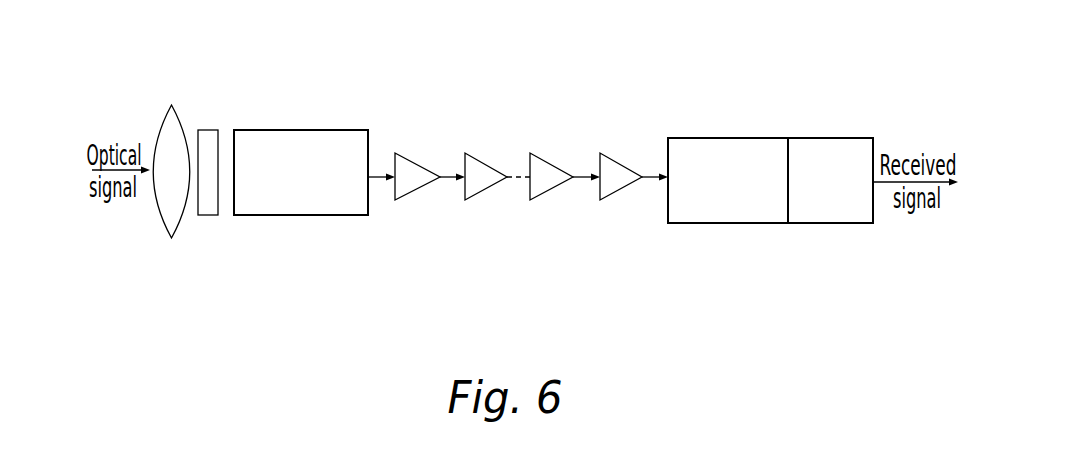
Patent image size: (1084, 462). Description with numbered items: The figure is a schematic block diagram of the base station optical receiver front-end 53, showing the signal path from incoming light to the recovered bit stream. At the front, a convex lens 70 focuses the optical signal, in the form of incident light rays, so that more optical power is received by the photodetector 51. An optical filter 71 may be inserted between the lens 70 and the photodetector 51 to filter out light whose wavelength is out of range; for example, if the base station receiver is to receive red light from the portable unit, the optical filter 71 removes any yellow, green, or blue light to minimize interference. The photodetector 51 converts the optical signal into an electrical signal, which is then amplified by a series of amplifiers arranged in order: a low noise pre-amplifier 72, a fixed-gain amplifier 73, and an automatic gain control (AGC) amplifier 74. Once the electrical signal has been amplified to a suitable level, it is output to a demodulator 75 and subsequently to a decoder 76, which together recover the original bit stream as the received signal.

The convex lens 70 is at (173, 108).
The optical filter 71 is at (208, 215).
The photodetector 51 is at (300, 130).
The base station optical receiver front-end 53 is at (523, 146).
The low noise pre-amplifier 72 is at (402, 155).
The fixed-gain amplifier 73 is at (522, 177).
The automatic gain control (AGC) amplifier 74 is at (613, 163).
The demodulator 75 is at (713, 138).
The decoder 76 is at (857, 138).